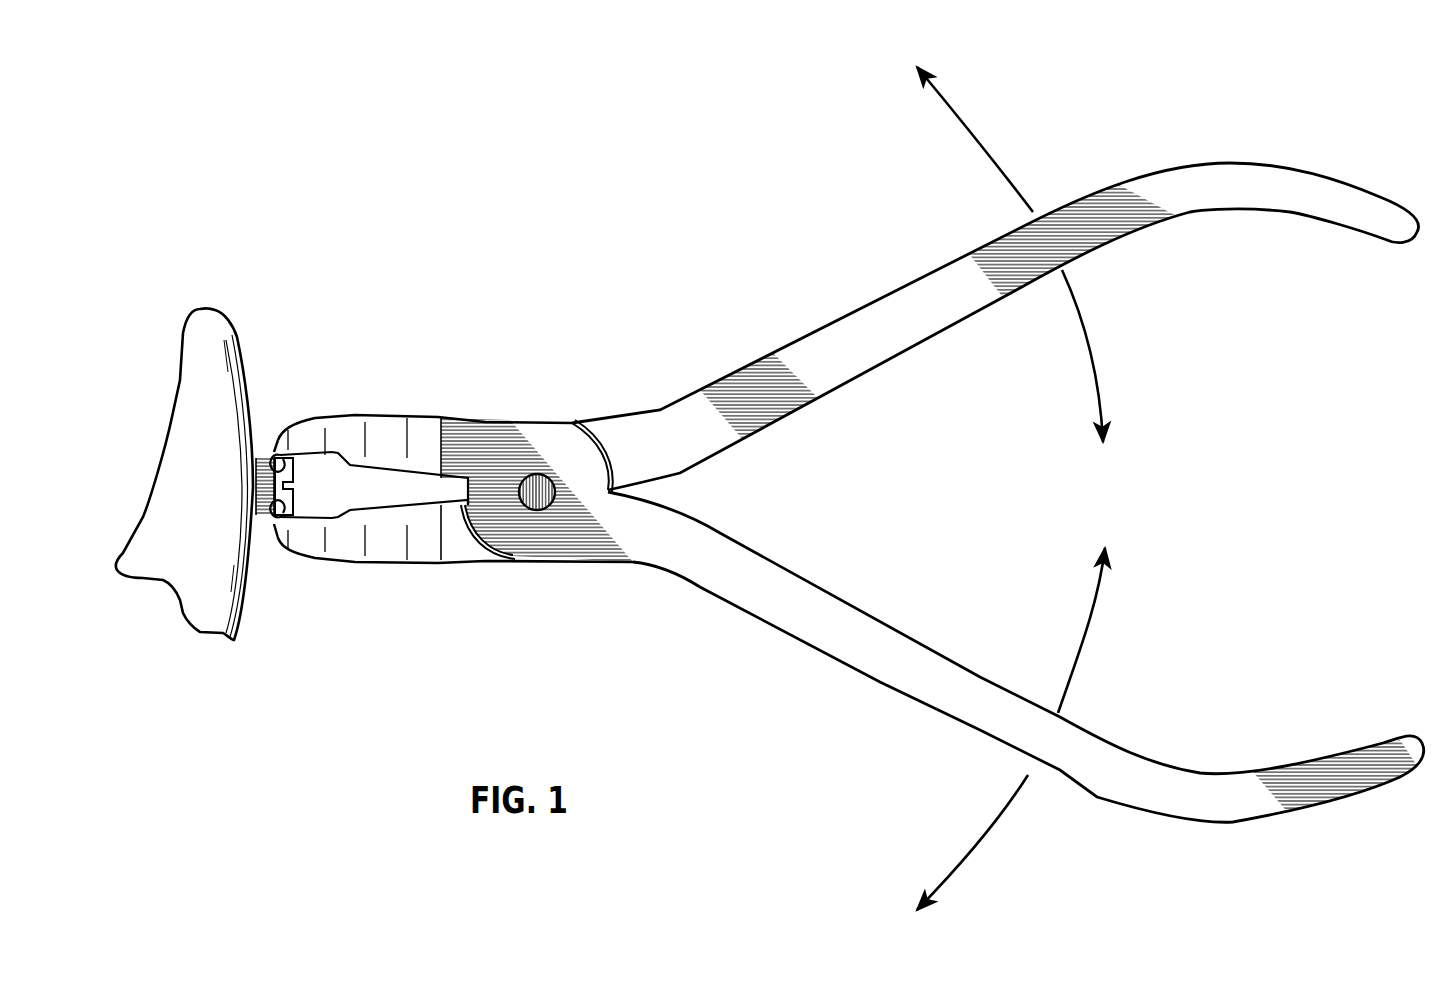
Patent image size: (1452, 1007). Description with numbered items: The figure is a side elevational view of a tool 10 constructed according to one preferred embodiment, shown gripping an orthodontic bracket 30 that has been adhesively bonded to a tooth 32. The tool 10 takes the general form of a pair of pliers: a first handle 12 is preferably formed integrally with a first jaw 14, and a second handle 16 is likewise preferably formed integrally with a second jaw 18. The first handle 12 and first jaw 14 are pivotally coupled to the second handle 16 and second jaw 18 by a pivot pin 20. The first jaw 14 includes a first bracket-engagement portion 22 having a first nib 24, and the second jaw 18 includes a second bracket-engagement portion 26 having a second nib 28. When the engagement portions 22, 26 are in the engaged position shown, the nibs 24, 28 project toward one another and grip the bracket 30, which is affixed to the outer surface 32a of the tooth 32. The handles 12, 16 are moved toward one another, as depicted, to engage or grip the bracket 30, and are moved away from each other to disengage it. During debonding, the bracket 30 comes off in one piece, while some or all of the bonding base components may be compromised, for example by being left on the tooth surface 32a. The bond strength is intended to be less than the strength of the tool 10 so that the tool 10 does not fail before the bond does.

The tool 10 is at (636, 292).
The first handle 12 is at (793, 348).
The first jaw 14 is at (385, 565).
The second handle 16 is at (822, 590).
The second jaw 18 is at (390, 415).
The pivot pin 20 is at (537, 490).
The first bracket-engagement portion 22 is at (282, 527).
The first nib 24 is at (272, 520).
The second bracket-engagement portion 26 is at (284, 436).
The second nib 28 is at (272, 456).
The orthodontic bracket 30 is at (297, 473).
The tooth 32 is at (240, 330).
The outer surface 32a is at (253, 380).